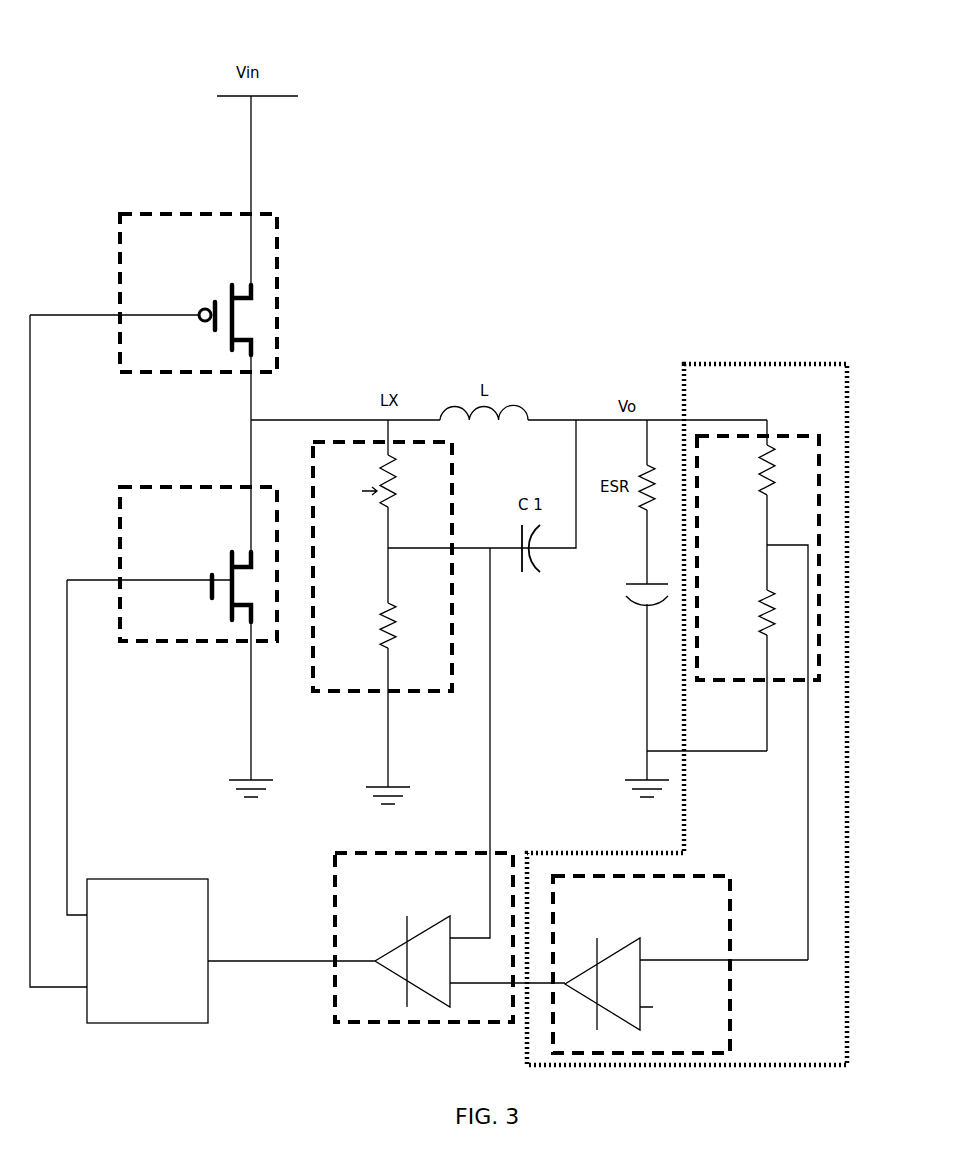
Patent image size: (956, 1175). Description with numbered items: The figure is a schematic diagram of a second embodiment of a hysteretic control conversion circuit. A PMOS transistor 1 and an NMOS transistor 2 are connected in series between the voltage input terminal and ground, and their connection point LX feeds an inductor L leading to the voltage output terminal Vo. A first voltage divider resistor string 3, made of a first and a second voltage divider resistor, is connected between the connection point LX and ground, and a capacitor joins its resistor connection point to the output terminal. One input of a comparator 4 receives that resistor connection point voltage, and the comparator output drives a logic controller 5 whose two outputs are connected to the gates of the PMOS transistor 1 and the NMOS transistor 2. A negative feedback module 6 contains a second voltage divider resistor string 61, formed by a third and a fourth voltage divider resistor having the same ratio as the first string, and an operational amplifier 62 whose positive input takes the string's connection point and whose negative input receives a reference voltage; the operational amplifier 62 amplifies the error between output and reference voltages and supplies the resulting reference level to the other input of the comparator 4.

The PMOS transistor 1 is at (262, 270).
The NMOS transistor 2 is at (262, 545).
The first voltage divider resistor string 3 is at (443, 475).
The comparator 4 is at (338, 920).
The logic controller 5 is at (195, 918).
The negative feedback module 6 is at (701, 714).
The second voltage divider resistor string 61 is at (795, 437).
The operational amplifier 62 is at (718, 921).